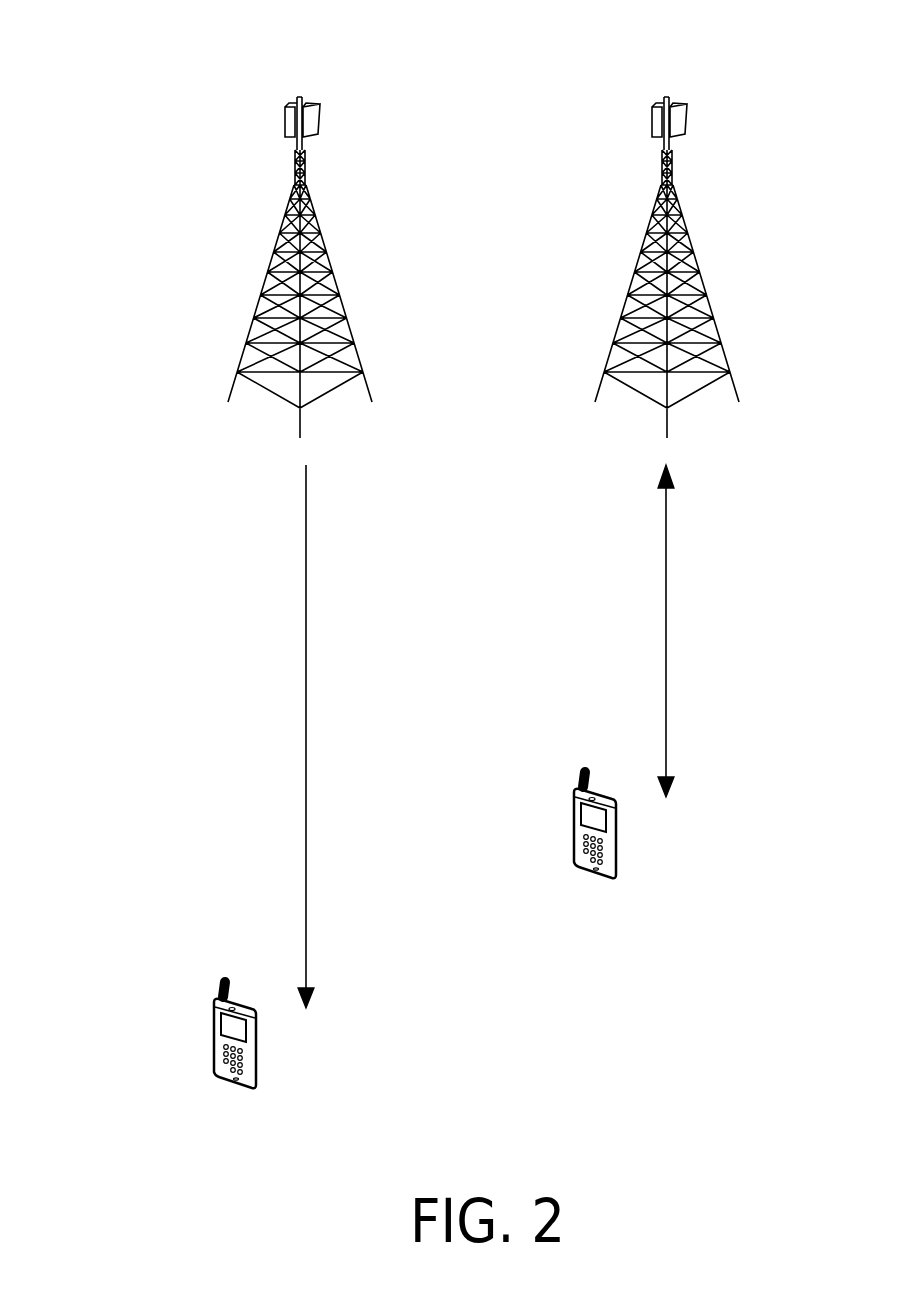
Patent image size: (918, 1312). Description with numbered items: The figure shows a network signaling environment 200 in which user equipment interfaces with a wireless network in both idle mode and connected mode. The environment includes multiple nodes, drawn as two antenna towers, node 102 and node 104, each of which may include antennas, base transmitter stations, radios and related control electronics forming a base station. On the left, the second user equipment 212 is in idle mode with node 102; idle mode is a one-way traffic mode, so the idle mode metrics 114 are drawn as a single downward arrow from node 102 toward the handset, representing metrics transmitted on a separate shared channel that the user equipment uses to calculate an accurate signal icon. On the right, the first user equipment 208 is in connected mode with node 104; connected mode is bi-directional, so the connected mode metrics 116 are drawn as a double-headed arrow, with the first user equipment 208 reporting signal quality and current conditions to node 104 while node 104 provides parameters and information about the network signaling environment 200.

The network signaling environment 200 is at (72, 74).
The node 102 is at (268, 272).
The node 104 is at (700, 273).
The idle mode metrics 114 is at (306, 650).
The connected mode metrics 116 is at (666, 650).
The UE 1 208 is at (598, 878).
The UE 2 212 is at (238, 1088).